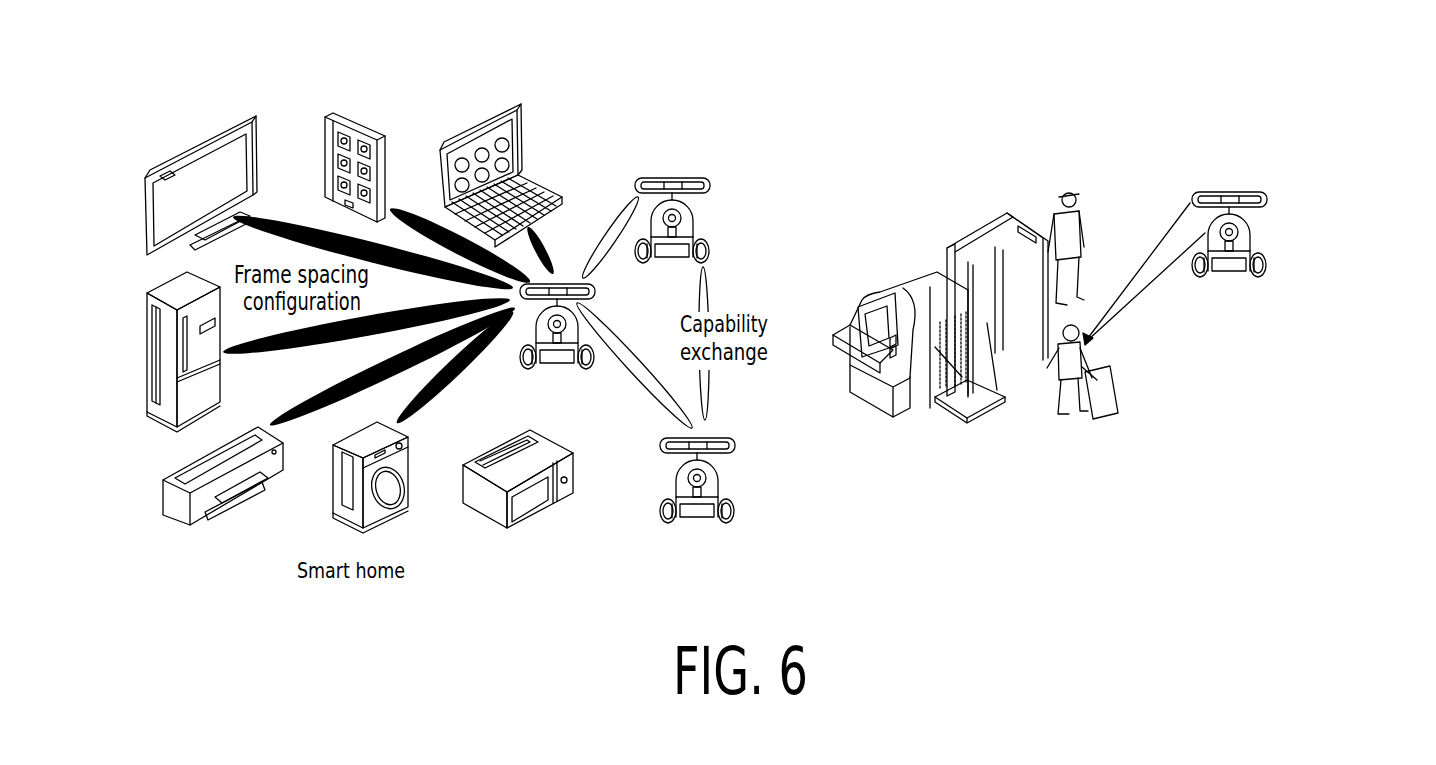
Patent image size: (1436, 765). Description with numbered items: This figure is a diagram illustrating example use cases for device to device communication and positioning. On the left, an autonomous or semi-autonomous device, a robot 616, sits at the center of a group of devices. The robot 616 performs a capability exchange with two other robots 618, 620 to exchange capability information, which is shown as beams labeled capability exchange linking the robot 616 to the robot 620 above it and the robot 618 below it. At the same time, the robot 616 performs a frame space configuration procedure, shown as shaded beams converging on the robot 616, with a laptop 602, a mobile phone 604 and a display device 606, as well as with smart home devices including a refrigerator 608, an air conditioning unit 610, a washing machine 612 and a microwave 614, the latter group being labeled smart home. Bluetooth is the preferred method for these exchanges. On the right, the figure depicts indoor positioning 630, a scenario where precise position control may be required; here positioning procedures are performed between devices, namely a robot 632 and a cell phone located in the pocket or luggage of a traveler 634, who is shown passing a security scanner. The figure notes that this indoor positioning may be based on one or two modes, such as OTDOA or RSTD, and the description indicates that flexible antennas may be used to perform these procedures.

The laptop 602 is at (493, 110).
The mobile phone 604 is at (368, 118).
The display device 606 is at (200, 150).
The refrigerator 608 is at (147, 355).
The air conditioning unit 610 is at (165, 522).
The washing machine 612 is at (333, 488).
The microwave 614 is at (527, 515).
The robot 616 is at (565, 363).
The robot 618 is at (697, 517).
The robot 620 is at (690, 178).
The indoor positioning use case 630 is at (1133, 95).
The robot 632 is at (1253, 233).
The traveler 634 is at (1048, 362).